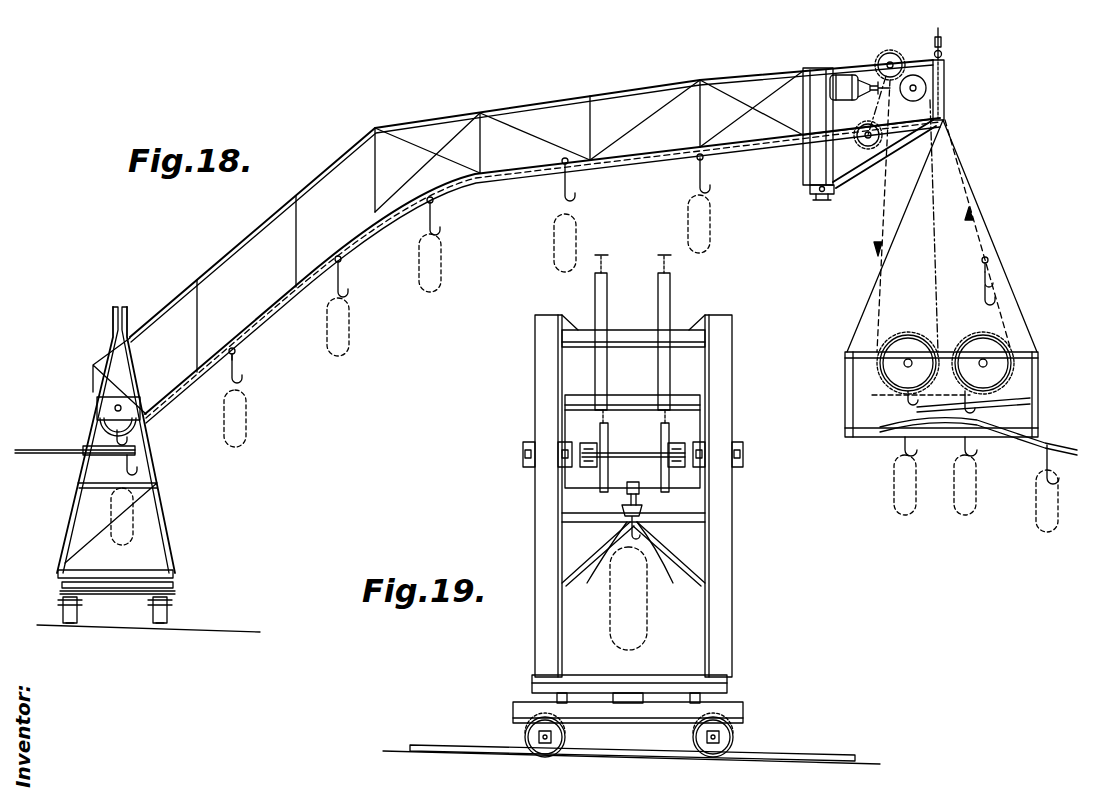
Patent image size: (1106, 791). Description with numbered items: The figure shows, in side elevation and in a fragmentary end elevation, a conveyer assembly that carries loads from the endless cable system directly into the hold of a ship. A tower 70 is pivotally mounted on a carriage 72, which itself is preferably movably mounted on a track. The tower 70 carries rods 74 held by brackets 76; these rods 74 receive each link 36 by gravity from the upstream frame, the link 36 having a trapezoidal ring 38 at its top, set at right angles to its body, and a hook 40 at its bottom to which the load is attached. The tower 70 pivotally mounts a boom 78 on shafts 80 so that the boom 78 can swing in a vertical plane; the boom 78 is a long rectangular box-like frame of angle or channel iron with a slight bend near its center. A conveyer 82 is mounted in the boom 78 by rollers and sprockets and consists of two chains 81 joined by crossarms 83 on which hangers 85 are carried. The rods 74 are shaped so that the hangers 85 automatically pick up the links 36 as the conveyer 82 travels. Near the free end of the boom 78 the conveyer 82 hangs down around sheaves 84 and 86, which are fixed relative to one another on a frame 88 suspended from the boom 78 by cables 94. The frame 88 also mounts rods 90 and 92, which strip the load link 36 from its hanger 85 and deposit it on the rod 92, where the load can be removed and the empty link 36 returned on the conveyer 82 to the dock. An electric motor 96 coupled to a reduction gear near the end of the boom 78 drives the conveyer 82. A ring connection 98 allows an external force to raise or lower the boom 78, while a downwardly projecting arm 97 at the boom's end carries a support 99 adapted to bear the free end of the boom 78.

In FIG. 18, the link 36 is at (990, 292).
In FIG. 18, the trapezoidal ring 38 is at (240, 351).
In FIG. 18, the hook 40 is at (998, 308).
In FIG. 18, the tower 70 is at (72, 508).
In FIG. 19, the tower 70 is at (722, 606).
In FIG. 18, the carriage 72 is at (110, 600).
In FIG. 19, the carriage 72 is at (650, 718).
In FIG. 18, the rods 74 is at (47, 449).
In FIG. 19, the rods 74 is at (588, 585).
In FIG. 19, the brackets 76 is at (562, 565).
In FIG. 18, the boom 78 is at (508, 108).
In FIG. 19, the boom 78 is at (646, 402).
In FIG. 18, the shafts 80 is at (112, 408).
In FIG. 19, the shafts 80 is at (523, 452).
In FIG. 18, the chains 81 is at (605, 126).
In FIG. 19, the chains 81 is at (662, 262).
In FIG. 18, the conveyer 82 is at (100, 452).
In FIG. 19, the conveyer 82 is at (660, 438).
In FIG. 18, the crossarms 83 is at (582, 168).
In FIG. 19, the crossarms 83 is at (622, 486).
In FIG. 18, the sheave 84 is at (920, 340).
In FIG. 18, the hangers 85 is at (562, 176).
In FIG. 19, the hangers 85 is at (640, 495).
In FIG. 18, the sheave 86 is at (978, 340).
In FIG. 18, the frame 88 is at (845, 378).
In FIG. 18, the rod 90 is at (1020, 388).
In FIG. 18, the rod 92 is at (1020, 420).
In FIG. 18, the cables 94 is at (920, 186).
In FIG. 18, the electric motor 96 is at (845, 82).
In FIG. 18, the projecting arm 97 is at (804, 160).
In FIG. 18, the ring connection 98 is at (945, 44).
In FIG. 18, the support 99 is at (824, 200).